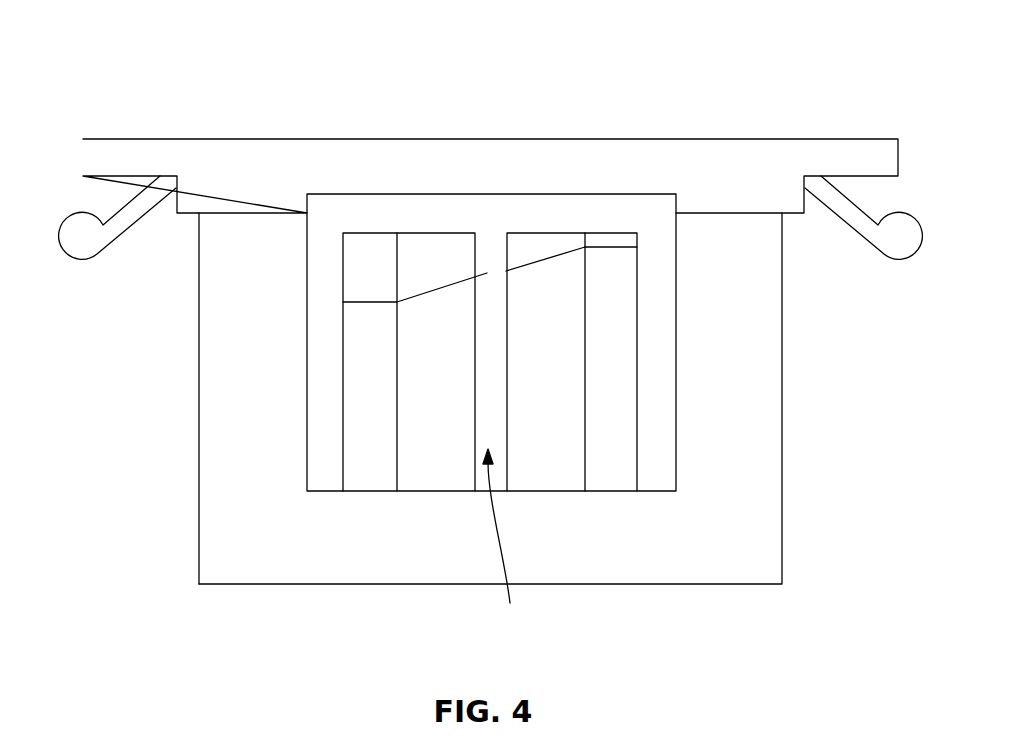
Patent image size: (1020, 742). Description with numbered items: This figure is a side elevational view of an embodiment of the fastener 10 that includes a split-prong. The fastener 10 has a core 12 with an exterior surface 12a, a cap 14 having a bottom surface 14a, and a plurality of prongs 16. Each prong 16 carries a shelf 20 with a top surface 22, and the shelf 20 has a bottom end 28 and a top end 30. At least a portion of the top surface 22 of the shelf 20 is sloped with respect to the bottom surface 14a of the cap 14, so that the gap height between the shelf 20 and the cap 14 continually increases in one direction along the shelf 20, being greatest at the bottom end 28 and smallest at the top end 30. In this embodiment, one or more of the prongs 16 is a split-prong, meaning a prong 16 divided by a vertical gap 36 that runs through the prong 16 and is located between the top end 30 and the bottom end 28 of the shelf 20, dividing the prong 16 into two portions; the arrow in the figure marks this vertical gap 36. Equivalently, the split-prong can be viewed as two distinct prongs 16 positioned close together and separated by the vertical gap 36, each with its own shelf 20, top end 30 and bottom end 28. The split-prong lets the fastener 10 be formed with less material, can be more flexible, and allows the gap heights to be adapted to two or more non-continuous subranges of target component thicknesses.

The fastener 10 is at (116, 57).
The core 12 is at (223, 478).
The exterior surface 12a is at (199, 428).
The cap 14 is at (98, 158).
The bottom surface 14a is at (333, 194).
The prong 16 is at (417, 448).
The shelf 20 is at (382, 302).
The top surface 22 is at (443, 285).
The bottom end 28 is at (343, 302).
The top end 30 is at (487, 273).
The vertical gap 36 is at (504, 543).